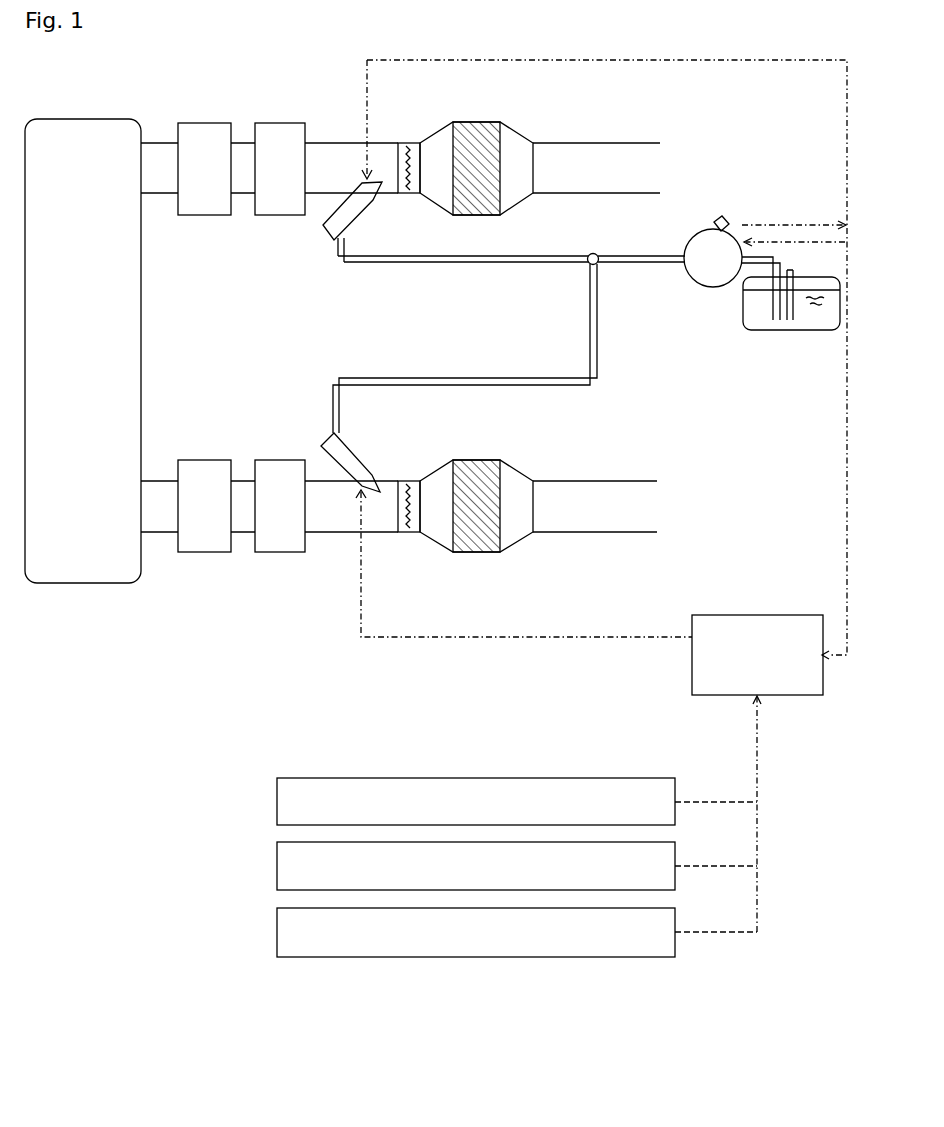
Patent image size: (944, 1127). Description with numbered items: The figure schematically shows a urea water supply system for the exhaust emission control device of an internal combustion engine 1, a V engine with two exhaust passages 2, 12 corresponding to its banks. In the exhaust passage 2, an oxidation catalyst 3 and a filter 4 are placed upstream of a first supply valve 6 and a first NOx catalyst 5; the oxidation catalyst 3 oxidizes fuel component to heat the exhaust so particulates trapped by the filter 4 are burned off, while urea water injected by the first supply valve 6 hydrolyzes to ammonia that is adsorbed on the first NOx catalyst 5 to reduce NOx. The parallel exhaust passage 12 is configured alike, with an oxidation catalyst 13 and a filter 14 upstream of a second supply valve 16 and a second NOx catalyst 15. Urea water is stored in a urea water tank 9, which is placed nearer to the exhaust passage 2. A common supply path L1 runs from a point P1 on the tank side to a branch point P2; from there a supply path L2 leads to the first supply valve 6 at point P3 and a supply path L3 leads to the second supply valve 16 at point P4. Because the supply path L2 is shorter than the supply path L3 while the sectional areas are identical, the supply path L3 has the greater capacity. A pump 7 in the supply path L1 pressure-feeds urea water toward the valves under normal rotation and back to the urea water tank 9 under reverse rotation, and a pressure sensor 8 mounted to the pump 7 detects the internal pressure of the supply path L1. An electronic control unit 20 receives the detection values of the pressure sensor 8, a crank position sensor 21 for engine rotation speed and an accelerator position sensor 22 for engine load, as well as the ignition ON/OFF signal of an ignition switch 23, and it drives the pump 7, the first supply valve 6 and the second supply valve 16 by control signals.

The internal combustion engine 1 is at (100, 118).
The exhaust passage 2 is at (150, 140).
The oxidation catalyst 3 is at (203, 122).
The filter 4 is at (258, 122).
The first NOx catalyst 5 is at (470, 122).
The first supply valve 6 is at (356, 216).
The pump 7 is at (711, 289).
The pressure sensor 8 is at (722, 215).
The urea water tank 9 is at (770, 330).
The exhaust passage 12 is at (150, 478).
The oxidation catalyst 13 is at (203, 459).
The filter 14 is at (258, 459).
The second NOx catalyst 15 is at (480, 460).
The second supply valve 16 is at (360, 452).
The electronic control unit 20 is at (768, 614).
The crank position sensor 21 is at (276, 805).
The accelerator position sensor 22 is at (276, 869).
The ignition switch 23 is at (276, 935).
The supply path L1 is at (642, 264).
The supply path L2 is at (386, 264).
The supply path L3 is at (488, 378).
The point P1 is at (792, 278).
The branch point P2 is at (590, 266).
The first supply valve point P3 is at (334, 243).
The second supply valve point P4 is at (330, 432).